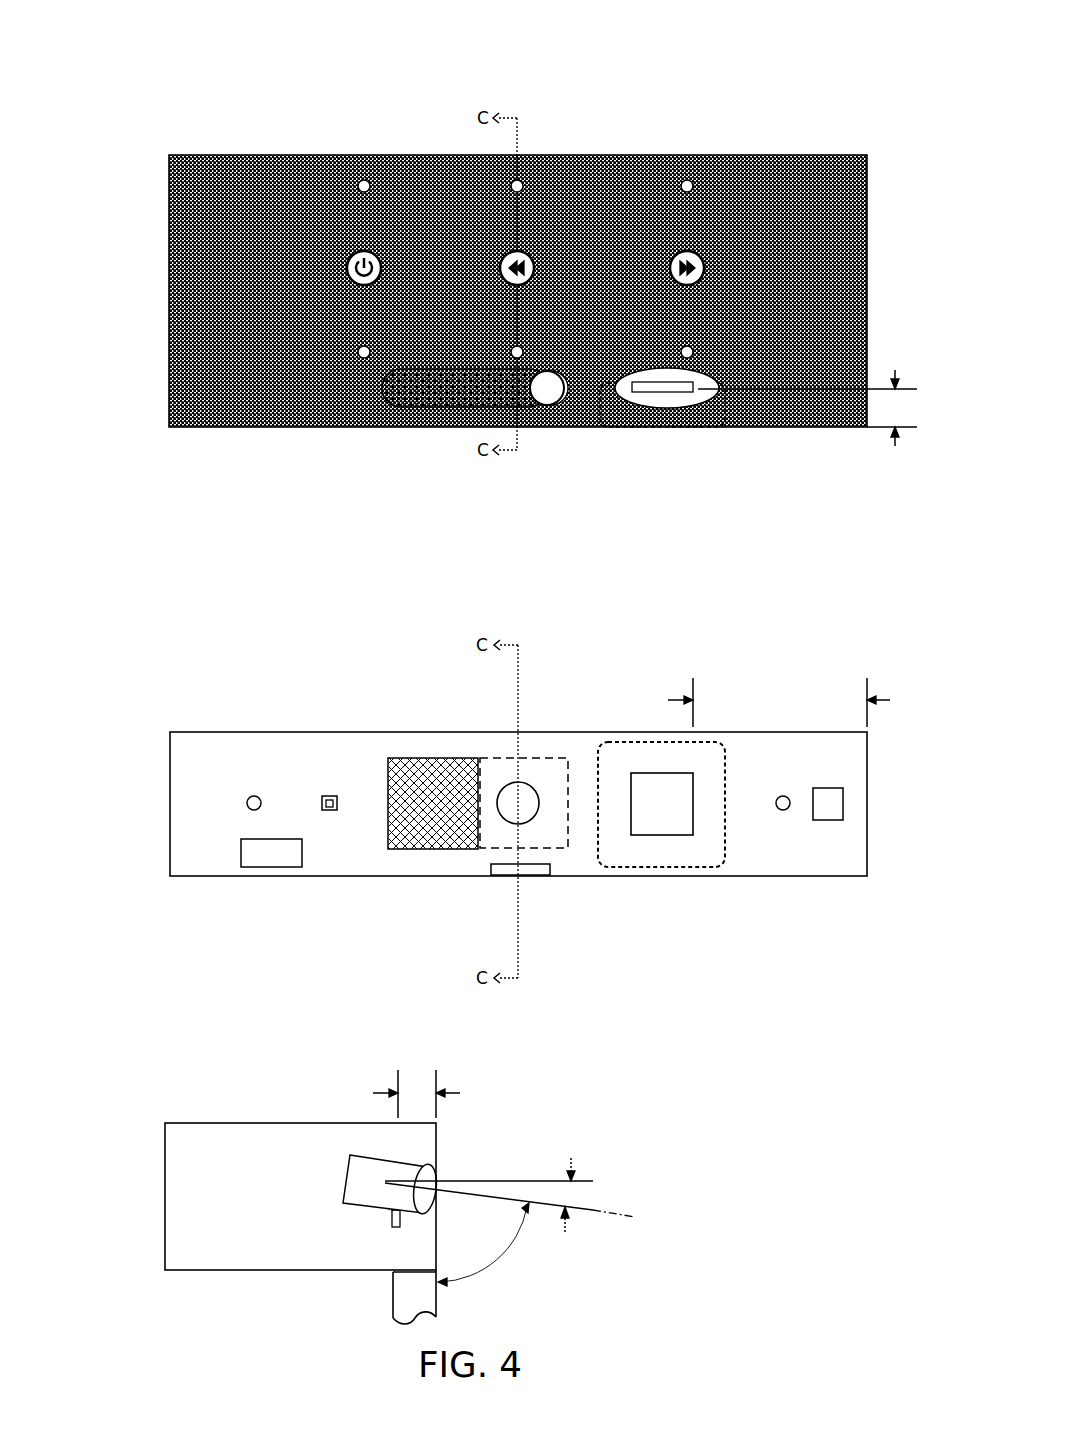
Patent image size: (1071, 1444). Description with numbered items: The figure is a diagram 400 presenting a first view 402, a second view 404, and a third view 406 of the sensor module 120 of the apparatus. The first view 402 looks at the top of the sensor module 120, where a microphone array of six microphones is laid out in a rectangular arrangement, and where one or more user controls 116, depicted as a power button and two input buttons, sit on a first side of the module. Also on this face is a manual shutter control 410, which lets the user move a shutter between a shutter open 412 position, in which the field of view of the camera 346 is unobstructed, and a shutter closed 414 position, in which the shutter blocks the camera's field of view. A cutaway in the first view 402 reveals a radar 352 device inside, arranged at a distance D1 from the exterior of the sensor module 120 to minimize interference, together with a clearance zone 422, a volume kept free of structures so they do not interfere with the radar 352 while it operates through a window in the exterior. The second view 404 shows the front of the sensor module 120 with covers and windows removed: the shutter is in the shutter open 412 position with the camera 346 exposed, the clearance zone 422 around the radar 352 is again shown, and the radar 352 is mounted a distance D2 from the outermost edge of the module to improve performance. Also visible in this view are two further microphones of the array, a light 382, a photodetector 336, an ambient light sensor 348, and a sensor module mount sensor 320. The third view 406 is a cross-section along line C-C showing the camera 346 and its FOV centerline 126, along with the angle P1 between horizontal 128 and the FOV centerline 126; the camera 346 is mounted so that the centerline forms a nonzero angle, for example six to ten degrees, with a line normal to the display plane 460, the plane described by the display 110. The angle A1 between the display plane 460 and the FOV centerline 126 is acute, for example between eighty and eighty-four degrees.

The diagram 400 is at (853, 21).
The first view 402 is at (201, 37).
The second view 404 is at (446, 708).
The third view 406 is at (249, 1128).
The sensor module 120 is at (518, 245).
The user controls 116 is at (373, 203).
The manual shutter control 410 is at (396, 445).
The radar 352 is at (507, 834).
The clearance zone 422 is at (713, 672).
The light 382 is at (280, 738).
The camera 346 is at (147, 1162).
The photodetector 336 is at (160, 879).
The shutter open 412 is at (368, 847).
The shutter closed 414 is at (404, 932).
The ambient light sensor 348 is at (705, 907).
The sensor module mount sensor 320 is at (535, 888).
The horizontal 128 is at (565, 1179).
The FOV centerline 126 is at (601, 1207).
The display plane 460 is at (614, 1290).
The display 110 is at (319, 1310).
The distance D1 is at (632, 744).
The distance D2 is at (766, 702).
The angle P1 is at (572, 1183).
The angle A1 is at (485, 1244).